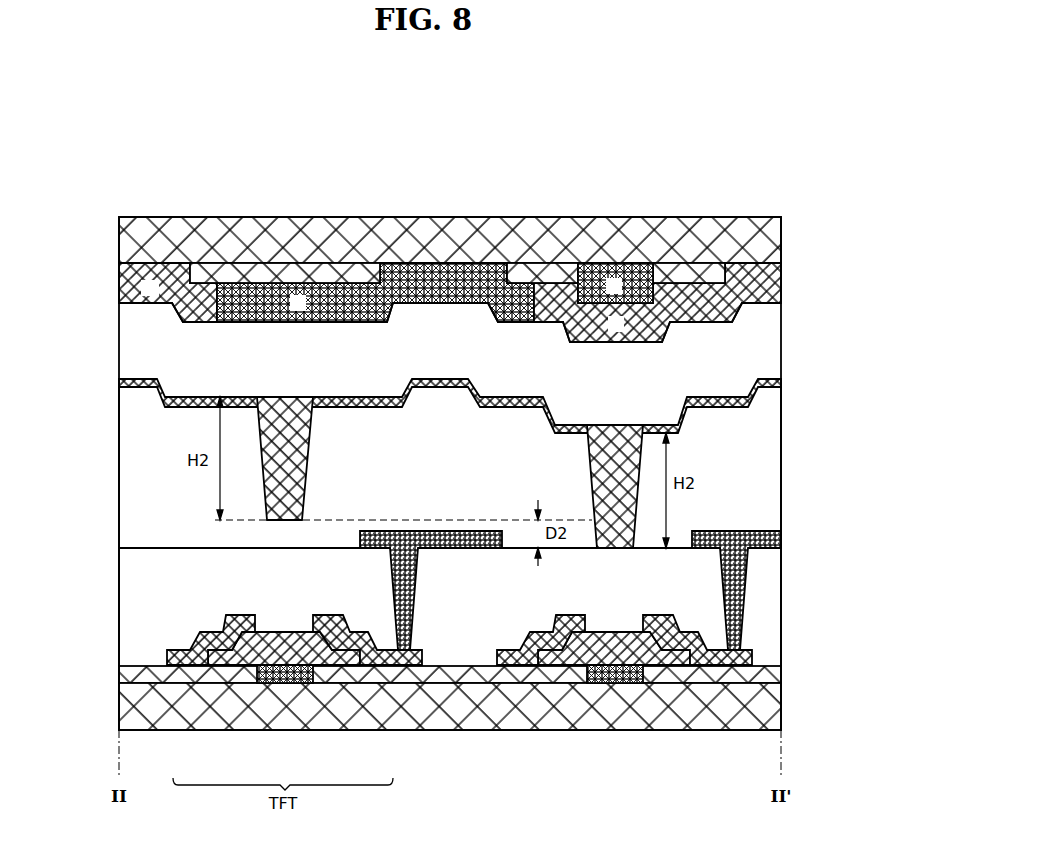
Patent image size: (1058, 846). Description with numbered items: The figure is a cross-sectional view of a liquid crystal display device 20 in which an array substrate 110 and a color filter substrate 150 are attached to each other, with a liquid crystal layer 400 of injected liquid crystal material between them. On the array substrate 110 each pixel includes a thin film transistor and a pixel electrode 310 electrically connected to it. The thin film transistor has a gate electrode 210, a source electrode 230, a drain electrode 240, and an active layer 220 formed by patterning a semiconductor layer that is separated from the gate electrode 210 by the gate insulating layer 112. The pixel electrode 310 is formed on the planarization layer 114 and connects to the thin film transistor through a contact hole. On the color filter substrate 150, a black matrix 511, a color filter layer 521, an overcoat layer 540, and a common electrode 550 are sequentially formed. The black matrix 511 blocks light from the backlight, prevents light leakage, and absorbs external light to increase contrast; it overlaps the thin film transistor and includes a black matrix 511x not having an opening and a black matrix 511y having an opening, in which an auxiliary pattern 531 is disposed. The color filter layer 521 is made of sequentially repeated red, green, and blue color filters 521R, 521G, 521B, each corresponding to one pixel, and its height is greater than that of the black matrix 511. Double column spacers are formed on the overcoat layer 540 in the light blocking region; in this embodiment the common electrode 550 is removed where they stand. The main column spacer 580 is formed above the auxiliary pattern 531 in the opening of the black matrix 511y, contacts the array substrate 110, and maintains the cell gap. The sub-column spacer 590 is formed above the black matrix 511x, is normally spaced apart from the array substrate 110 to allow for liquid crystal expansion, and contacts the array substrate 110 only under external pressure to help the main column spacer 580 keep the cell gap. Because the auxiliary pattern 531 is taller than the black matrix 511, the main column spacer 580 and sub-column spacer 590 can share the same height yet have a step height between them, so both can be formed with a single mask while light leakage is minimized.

The liquid crystal display device 20 is at (729, 147).
The array substrate 110 is at (119, 710).
The gate insulating layer 112 is at (119, 675).
The planarization layer 114 is at (119, 606).
The color filter substrate 150 is at (119, 244).
The gate electrode 210 is at (283, 675).
The active layer 220 is at (221, 655).
The source electrode 230 is at (182, 654).
The drain electrode 240 is at (384, 654).
The pixel electrode 310 is at (452, 531).
The liquid crystal layer 400 is at (119, 464).
The black matrix 511 is at (457, 198).
The black matrix not having an opening 511x is at (333, 270).
The black matrix having an opening 511y is at (540, 270).
The color filter layer 521 is at (416, 257).
The green color filter 521G is at (150, 278).
The blue color filter 521B is at (407, 278).
The red color filter 521R is at (743, 272).
The auxiliary pattern 531 is at (632, 272).
The overcoat layer 540 is at (119, 340).
The common electrode 550 is at (119, 383).
The main column spacer 580 is at (592, 470).
The sub-column spacer 590 is at (306, 464).